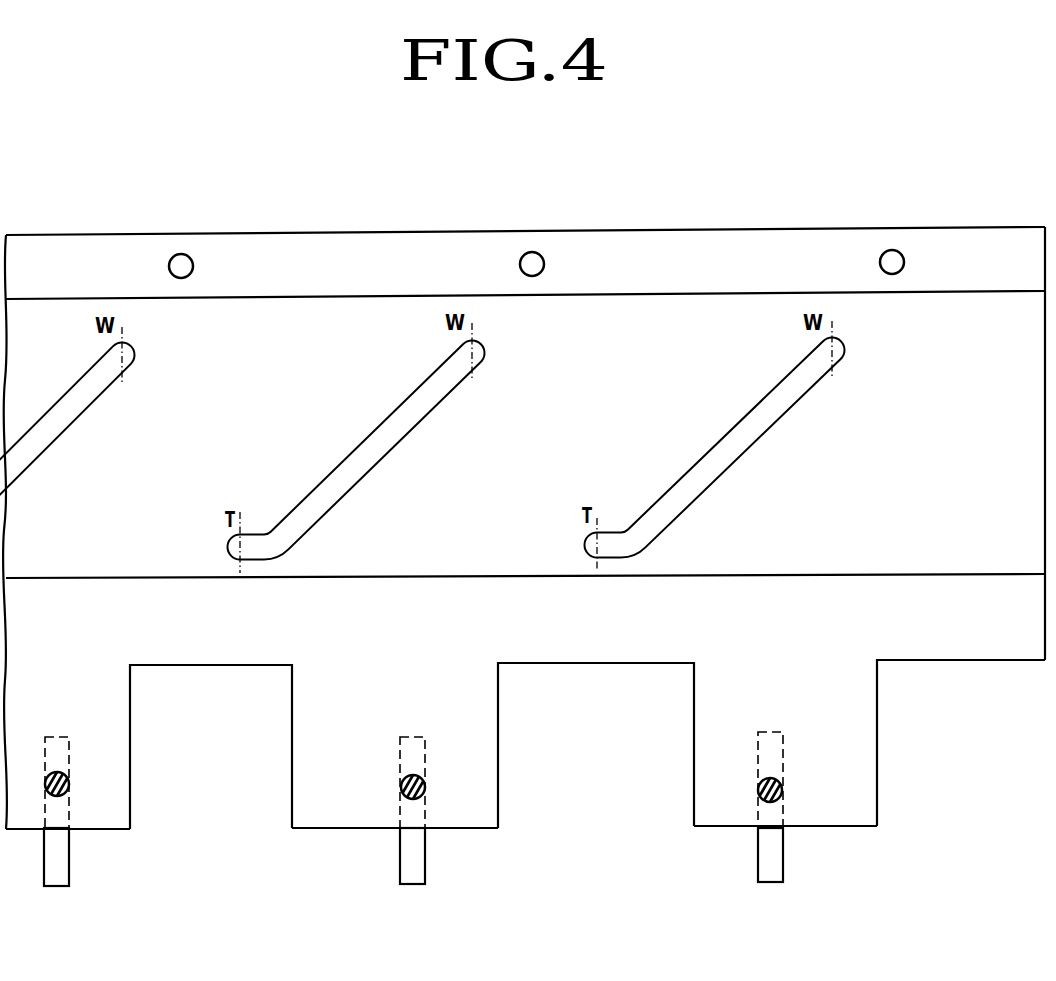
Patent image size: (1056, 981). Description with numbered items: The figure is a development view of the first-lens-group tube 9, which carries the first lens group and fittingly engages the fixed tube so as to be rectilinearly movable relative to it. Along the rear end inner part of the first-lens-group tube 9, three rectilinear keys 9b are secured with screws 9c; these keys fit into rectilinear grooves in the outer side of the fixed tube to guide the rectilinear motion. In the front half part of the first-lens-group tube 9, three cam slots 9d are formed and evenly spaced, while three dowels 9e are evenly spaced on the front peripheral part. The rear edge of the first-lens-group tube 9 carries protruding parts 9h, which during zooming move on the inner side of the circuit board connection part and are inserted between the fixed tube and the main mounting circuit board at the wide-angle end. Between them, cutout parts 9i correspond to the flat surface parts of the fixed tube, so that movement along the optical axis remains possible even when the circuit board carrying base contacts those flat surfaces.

The first-lens-group tube 9 is at (727, 256).
The rectilinear keys 9b is at (60, 855).
The screws 9c is at (59, 771).
The cam slots 9d is at (72, 428).
The dowels 9e is at (183, 254).
The protruding parts 9h is at (328, 805).
The cutout parts 9i is at (291, 757).